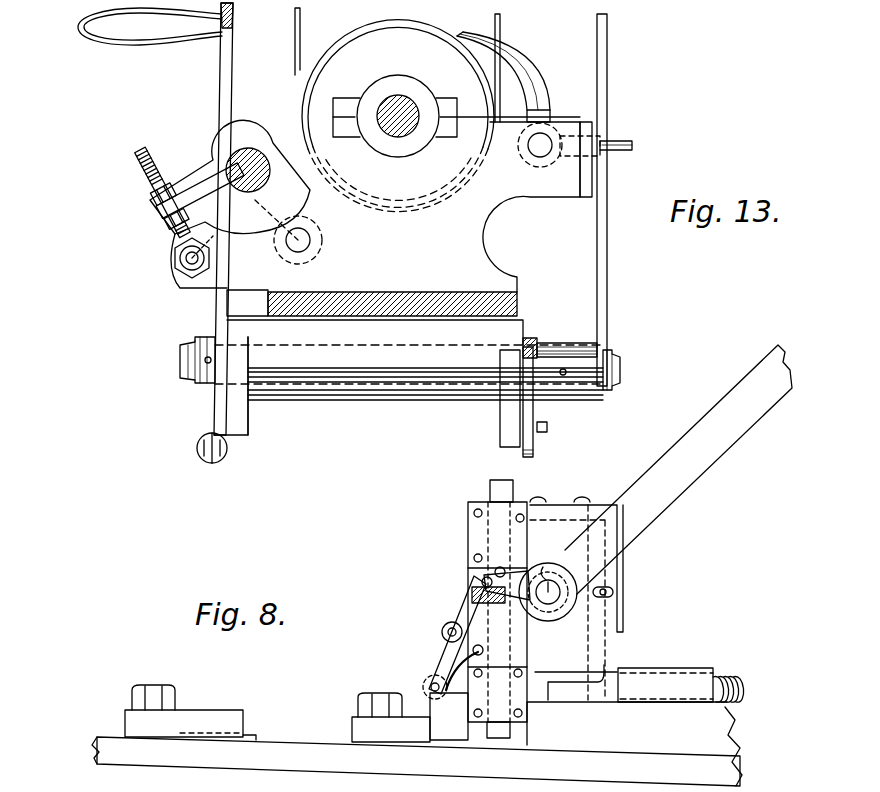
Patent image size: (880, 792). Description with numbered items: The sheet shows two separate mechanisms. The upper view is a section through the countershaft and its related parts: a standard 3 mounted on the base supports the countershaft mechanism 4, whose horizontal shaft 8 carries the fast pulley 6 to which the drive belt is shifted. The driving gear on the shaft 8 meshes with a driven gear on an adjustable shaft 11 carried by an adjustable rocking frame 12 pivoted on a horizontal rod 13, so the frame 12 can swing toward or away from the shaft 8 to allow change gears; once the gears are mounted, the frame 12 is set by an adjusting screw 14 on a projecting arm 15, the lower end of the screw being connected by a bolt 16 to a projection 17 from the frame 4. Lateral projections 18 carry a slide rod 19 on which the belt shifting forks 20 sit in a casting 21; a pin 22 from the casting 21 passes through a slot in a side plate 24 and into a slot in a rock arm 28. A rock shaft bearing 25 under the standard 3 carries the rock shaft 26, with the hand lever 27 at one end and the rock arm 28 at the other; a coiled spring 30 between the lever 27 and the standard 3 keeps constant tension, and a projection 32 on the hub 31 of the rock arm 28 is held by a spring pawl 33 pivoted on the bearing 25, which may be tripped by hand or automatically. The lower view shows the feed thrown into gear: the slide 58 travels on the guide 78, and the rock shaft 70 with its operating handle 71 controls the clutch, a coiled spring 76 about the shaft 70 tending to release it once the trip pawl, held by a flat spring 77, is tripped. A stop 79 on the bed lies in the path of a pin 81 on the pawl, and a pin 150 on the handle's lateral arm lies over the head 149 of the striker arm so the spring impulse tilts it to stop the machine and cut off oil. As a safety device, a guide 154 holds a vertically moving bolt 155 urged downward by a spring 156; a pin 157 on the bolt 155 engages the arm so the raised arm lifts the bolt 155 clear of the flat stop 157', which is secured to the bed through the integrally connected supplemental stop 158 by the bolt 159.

In FIG. 13, the standard 3 is at (517, 307).
In FIG. 13, the countershaft mechanism frame 4 is at (375, 300).
In FIG. 13, the fast pulley 6 is at (389, 27).
In FIG. 13, the horizontal shaft 8 is at (405, 107).
In FIG. 13, the adjustable shaft 11 is at (250, 148).
In FIG. 13, the adjustable rocking frame 12 is at (263, 146).
In FIG. 13, the horizontal rod 13 is at (312, 240).
In FIG. 13, the adjusting screw 14 is at (146, 180).
In FIG. 13, the projecting arm 15 is at (192, 190).
In FIG. 13, the bolt 16 is at (178, 270).
In FIG. 13, the projection 17 is at (212, 289).
In FIG. 13, the projections 18 is at (545, 197).
In FIG. 13, the slide rod 19 is at (559, 145).
In FIG. 13, the belt shifting forks 20 is at (536, 80).
In FIG. 13, the casting 21 is at (548, 114).
In FIG. 13, the pin 22 is at (623, 143).
In FIG. 13, the side plate 24 is at (589, 122).
In FIG. 13, the rock shaft bearing 25 is at (409, 377).
In FIG. 13, the rock shaft 26 is at (185, 360).
In FIG. 13, the hand lever 27 is at (222, 124).
In FIG. 13, the rock arm 28 is at (607, 265).
In FIG. 13, the coiled spring 30 is at (197, 456).
In FIG. 13, the hub 31 is at (560, 343).
In FIG. 13, the projection 32 is at (532, 338).
In FIG. 13, the spring pawl 33 is at (540, 424).
In FIG. 8, the slide 58 is at (620, 640).
In FIG. 8, the rock shaft 70 is at (556, 612).
In FIG. 8, the operating handle 71 is at (678, 469).
In FIG. 8, the coiled spring 76 is at (549, 562).
In FIG. 8, the flat spring 77 is at (462, 698).
In FIG. 8, the guide 78 is at (666, 680).
In FIG. 8, the stop 79 is at (353, 722).
In FIG. 8, the pin 81 is at (436, 673).
In FIG. 8, the head 149 is at (496, 603).
In FIG. 8, the pin 150 is at (482, 580).
In FIG. 8, the guide 154 is at (527, 668).
In FIG. 8, the bolt 155 is at (490, 490).
In FIG. 8, the spring 156 is at (522, 500).
In FIG. 8, the pin 157 is at (508, 560).
In FIG. 8, the flat stop 157' is at (417, 744).
In FIG. 8, the supplemental stop 158 is at (190, 725).
In FIG. 8, the bolt 159 is at (176, 696).